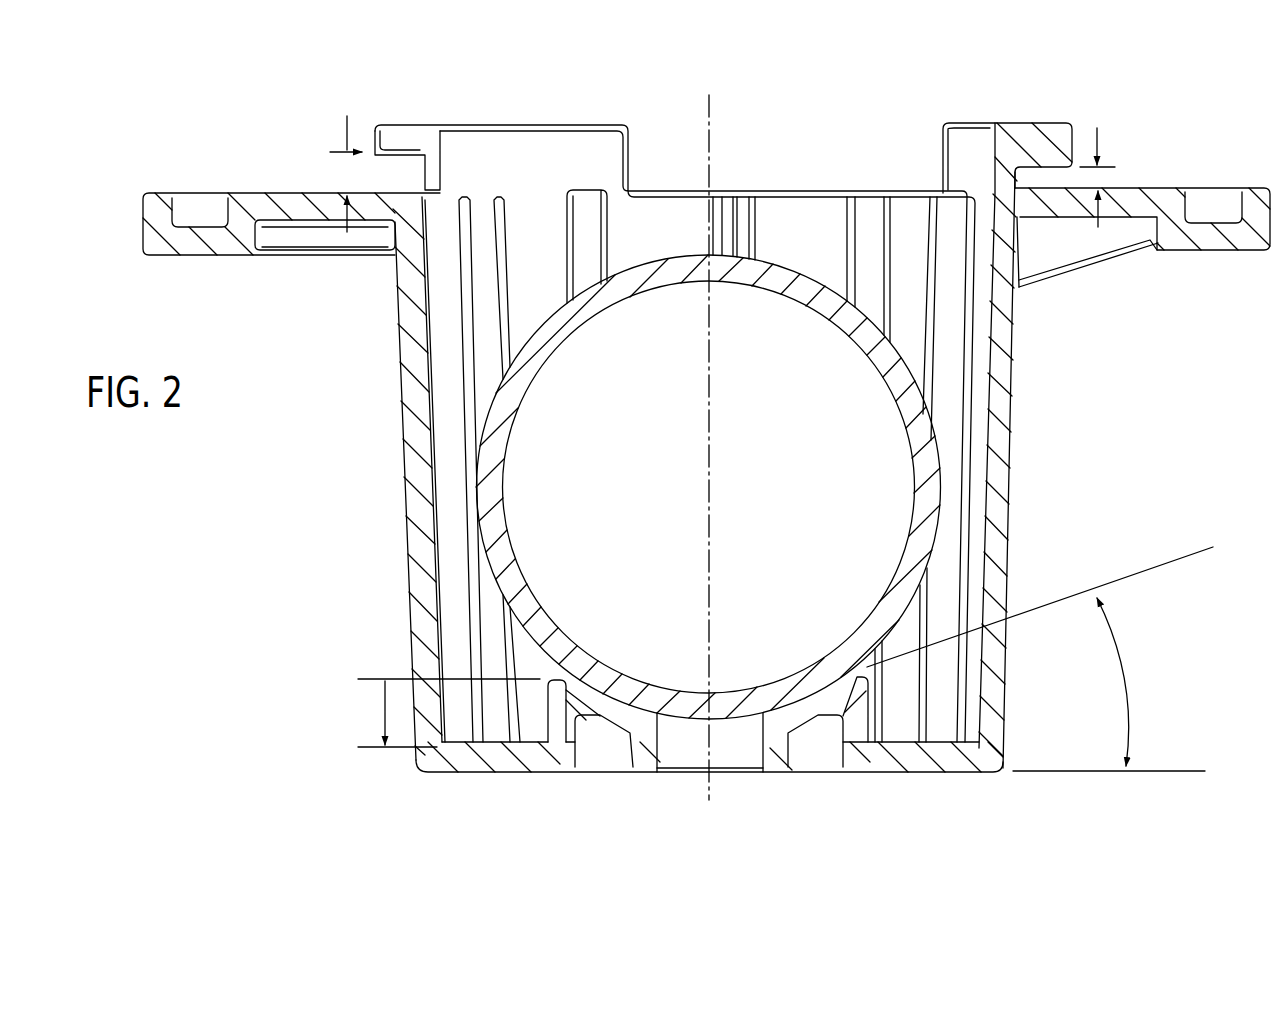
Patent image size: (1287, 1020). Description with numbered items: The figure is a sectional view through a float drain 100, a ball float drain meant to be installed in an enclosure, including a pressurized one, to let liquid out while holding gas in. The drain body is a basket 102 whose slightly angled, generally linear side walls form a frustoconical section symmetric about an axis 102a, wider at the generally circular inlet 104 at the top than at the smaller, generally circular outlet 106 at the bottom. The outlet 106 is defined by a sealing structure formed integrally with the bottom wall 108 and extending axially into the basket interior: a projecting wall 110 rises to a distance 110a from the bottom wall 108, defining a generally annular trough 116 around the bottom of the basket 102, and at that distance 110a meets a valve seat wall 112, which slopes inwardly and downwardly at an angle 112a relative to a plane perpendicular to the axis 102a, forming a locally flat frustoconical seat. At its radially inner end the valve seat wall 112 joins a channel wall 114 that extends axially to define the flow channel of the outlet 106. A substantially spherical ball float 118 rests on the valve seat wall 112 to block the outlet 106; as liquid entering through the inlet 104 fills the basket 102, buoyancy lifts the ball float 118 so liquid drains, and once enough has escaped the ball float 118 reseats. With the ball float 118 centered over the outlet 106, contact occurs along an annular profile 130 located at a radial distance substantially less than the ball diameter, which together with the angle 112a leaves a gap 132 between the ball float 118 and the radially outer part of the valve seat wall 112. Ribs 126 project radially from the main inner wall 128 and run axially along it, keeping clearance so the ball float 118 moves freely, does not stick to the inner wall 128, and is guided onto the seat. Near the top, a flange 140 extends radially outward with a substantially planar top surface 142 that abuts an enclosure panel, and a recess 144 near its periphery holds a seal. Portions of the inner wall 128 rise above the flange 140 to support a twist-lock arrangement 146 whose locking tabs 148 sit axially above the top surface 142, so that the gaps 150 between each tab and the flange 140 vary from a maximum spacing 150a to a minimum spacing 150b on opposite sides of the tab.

The float drain 100 is at (1250, 96).
The basket 102 is at (1023, 414).
The axis 102a is at (705, 101).
The inlet 104 is at (817, 178).
The outlet 106 is at (737, 784).
The bottom wall 108 is at (925, 773).
The projecting wall 110 is at (550, 706).
The distance 110a is at (385, 712).
The valve seat wall 112 is at (612, 694).
The angle 112a is at (1109, 684).
The channel wall 114 is at (658, 743).
The trough 116 is at (939, 728).
The ball float 118 is at (608, 288).
The ribs 126 is at (583, 228).
The inner wall 128 is at (1002, 340).
The annular profile 130 is at (600, 720).
The gap 132 is at (871, 667).
The flange 140 is at (1149, 275).
The top surface 142 is at (1158, 188).
The recess 144 is at (1214, 194).
The twist-lock arrangement 146 is at (312, 110).
The locking tabs 148 is at (405, 122).
The gaps 150 is at (410, 180).
The maximum spacing 150a is at (345, 128).
The minimum spacing 150b is at (1098, 140).